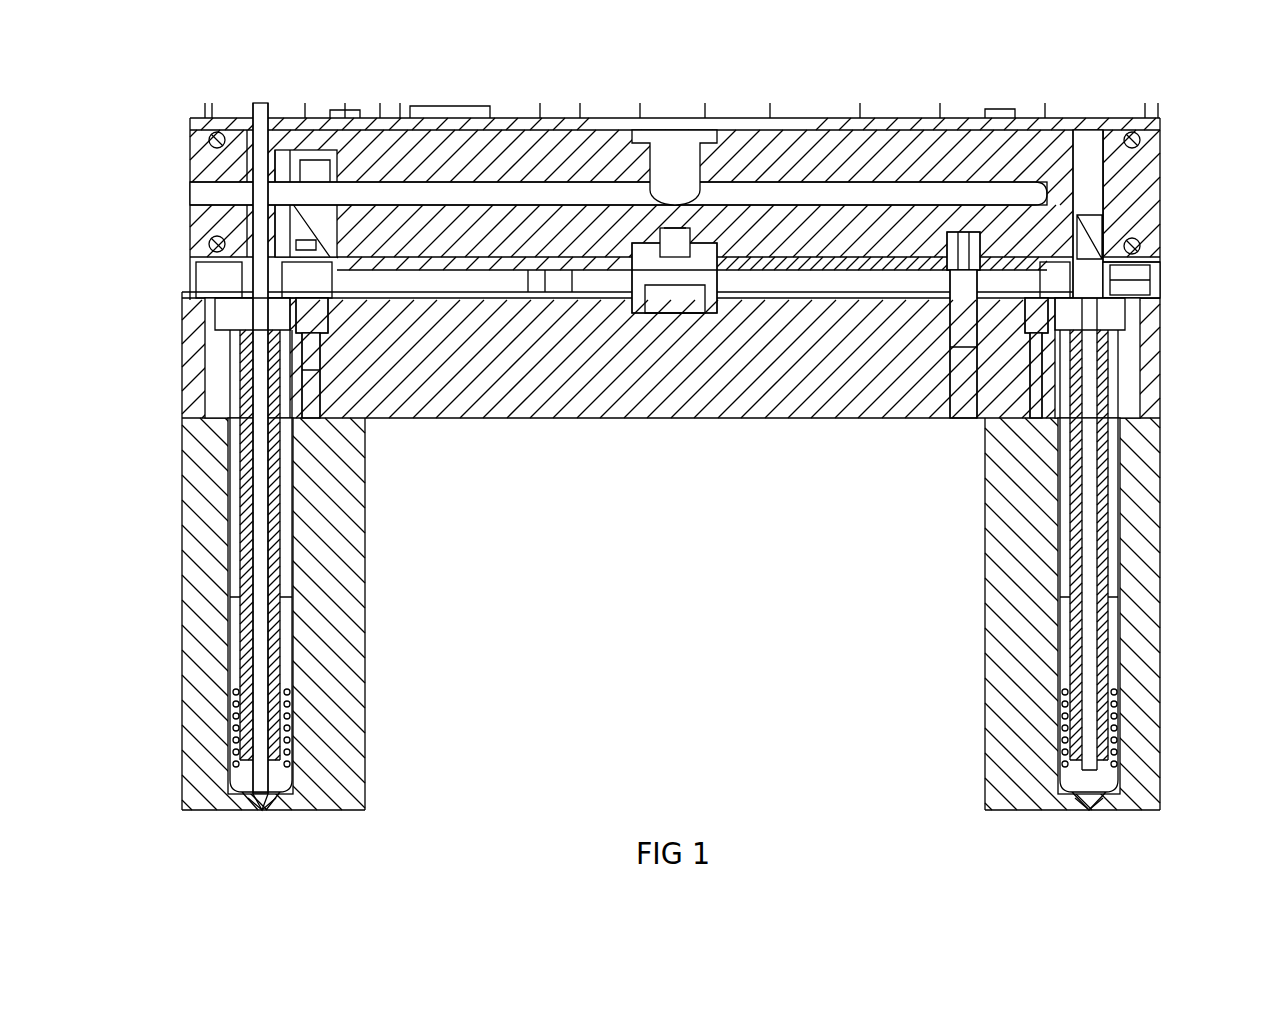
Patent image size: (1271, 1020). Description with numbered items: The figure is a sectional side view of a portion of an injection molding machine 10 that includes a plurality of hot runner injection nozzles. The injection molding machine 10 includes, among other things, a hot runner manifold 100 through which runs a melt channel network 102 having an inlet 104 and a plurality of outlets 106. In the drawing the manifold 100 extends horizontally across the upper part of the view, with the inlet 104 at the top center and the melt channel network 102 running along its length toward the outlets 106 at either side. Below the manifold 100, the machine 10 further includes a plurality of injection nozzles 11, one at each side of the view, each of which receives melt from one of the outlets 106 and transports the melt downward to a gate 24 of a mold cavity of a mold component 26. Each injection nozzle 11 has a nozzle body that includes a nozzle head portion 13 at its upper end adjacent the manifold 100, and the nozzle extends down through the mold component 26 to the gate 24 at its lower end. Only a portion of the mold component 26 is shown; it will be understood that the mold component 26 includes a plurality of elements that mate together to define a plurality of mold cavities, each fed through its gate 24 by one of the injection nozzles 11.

The injection molding machine 10 is at (212, 92).
The injection nozzle 11 is at (318, 574).
The nozzle head portion 13 is at (1165, 278).
The gate 24 is at (275, 815).
The mold component 26 is at (1015, 660).
The hot runner manifold 100 is at (795, 237).
The melt channel network 102 is at (885, 195).
The inlet 104 is at (668, 160).
The outlet 106 is at (312, 242).